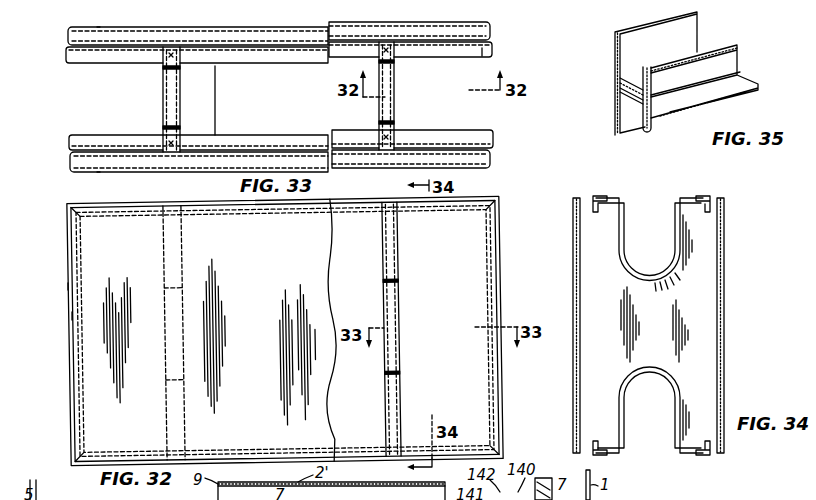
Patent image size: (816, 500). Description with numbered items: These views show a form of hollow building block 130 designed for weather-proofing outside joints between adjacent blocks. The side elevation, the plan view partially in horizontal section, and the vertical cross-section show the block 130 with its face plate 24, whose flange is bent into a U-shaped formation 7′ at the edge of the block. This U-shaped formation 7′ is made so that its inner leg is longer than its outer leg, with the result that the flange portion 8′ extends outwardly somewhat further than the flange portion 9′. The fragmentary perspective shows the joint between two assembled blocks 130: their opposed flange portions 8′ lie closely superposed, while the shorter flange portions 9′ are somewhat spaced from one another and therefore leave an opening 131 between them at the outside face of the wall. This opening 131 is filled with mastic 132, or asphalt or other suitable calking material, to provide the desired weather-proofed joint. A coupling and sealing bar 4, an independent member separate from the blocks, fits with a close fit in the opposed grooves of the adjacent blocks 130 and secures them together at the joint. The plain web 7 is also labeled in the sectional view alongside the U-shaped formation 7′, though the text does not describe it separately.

In FIG. 33, the face plate 24 is at (97, 27).
In FIG. 32, the face plate 24 is at (317, 286).
In FIG. 34, the face plate 24 is at (576, 276).
In FIG. 35, the face plate 24 is at (700, 36).
In FIG. 33, the U-shaped formation 7′ is at (106, 52).
In FIG. 32, the U-shaped formation 7′ is at (333, 213).
In FIG. 34, the U-shaped formation 7′ is at (600, 205).
In FIG. 35, the U-shaped formation 7′ is at (668, 66).
In FIG. 33, the web member 7 is at (482, 50).
In FIG. 33, the flange portion 8′ is at (66, 52).
In FIG. 32, the flange portion 8′ is at (106, 203).
In FIG. 34, the flange portion 8′ is at (602, 196).
In FIG. 35, the flange portion 8′ is at (680, 93).
In FIG. 33, the flange portion 9′ is at (69, 35).
In FIG. 32, the flange portion 9′ is at (142, 203).
In FIG. 34, the flange portion 9′ is at (578, 198).
In FIG. 35, the flange portion 9′ is at (636, 78).
In FIG. 33, the block 130 is at (213, 125).
In FIG. 32, the block 130 is at (249, 323).
In FIG. 34, the block 130 is at (725, 215).
In FIG. 35, the block 130 is at (616, 60).
In FIG. 35, the opening 131 is at (619, 100).
In FIG. 35, the mastic 132 is at (619, 84).
In FIG. 35, the coupling and sealing bar 4 is at (649, 122).